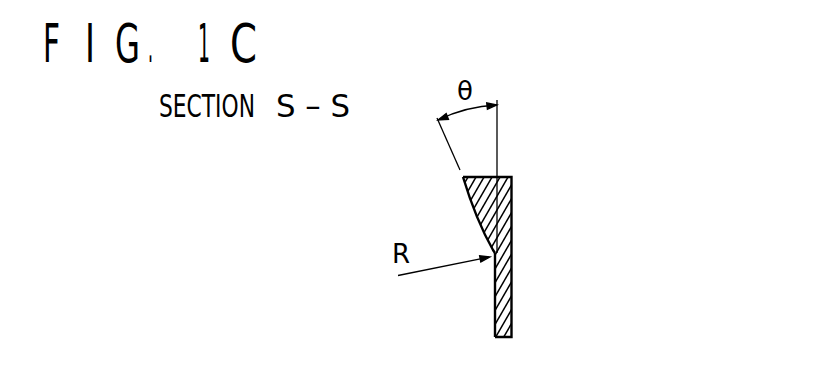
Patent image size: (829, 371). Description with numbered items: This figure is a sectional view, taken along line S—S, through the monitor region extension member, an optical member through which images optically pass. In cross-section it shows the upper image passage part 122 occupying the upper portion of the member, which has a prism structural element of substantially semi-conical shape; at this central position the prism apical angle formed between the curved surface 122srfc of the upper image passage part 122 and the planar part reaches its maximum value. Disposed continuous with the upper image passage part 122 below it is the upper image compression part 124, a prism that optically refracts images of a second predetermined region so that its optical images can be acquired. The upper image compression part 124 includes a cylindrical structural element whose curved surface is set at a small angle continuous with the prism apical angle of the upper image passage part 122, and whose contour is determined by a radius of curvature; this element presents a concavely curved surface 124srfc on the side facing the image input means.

The upper image passage part 122 is at (513, 202).
The curved surface of the upper image passage part 122srfc is at (481, 231).
The upper image compression part 124 is at (513, 258).
The concavely curved surface 124srfc is at (489, 264).